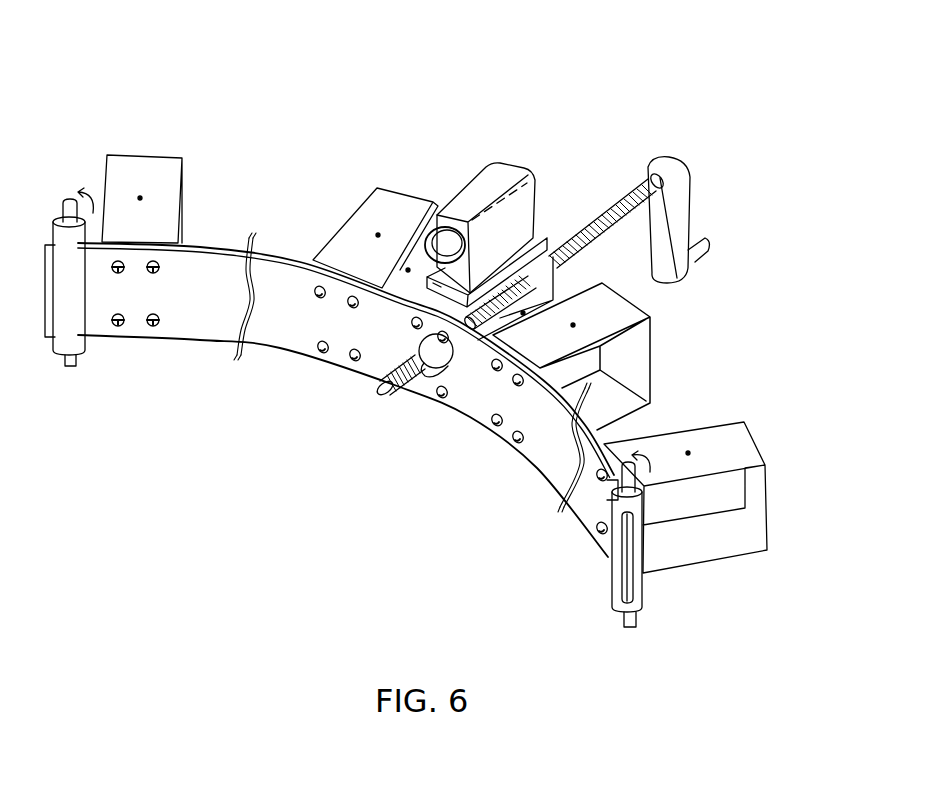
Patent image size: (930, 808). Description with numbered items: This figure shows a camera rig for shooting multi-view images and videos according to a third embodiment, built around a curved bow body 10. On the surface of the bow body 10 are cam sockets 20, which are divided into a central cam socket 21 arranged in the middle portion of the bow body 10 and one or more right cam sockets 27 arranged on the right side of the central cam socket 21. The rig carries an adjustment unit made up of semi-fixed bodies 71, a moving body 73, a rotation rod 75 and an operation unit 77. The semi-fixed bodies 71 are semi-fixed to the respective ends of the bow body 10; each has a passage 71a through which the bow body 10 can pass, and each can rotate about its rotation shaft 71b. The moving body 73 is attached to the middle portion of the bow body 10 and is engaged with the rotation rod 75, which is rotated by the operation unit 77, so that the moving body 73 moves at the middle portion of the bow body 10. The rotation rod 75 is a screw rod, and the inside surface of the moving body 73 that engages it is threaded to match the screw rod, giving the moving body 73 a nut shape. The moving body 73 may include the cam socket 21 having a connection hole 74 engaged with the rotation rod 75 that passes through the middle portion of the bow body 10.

The bow body 10 is at (217, 243).
The cam sockets 20 is at (617, 92).
The central cam socket 21 is at (552, 255).
The right cam sockets 27 is at (400, 203).
The semi-fixed bodies 71 is at (80, 357).
The passages 71a is at (613, 565).
The rotation shafts 71b is at (652, 478).
The moving body 73 is at (373, 404).
The connection hole 74 is at (442, 367).
The rotation rod 75 is at (387, 400).
The operation unit 77 is at (688, 203).